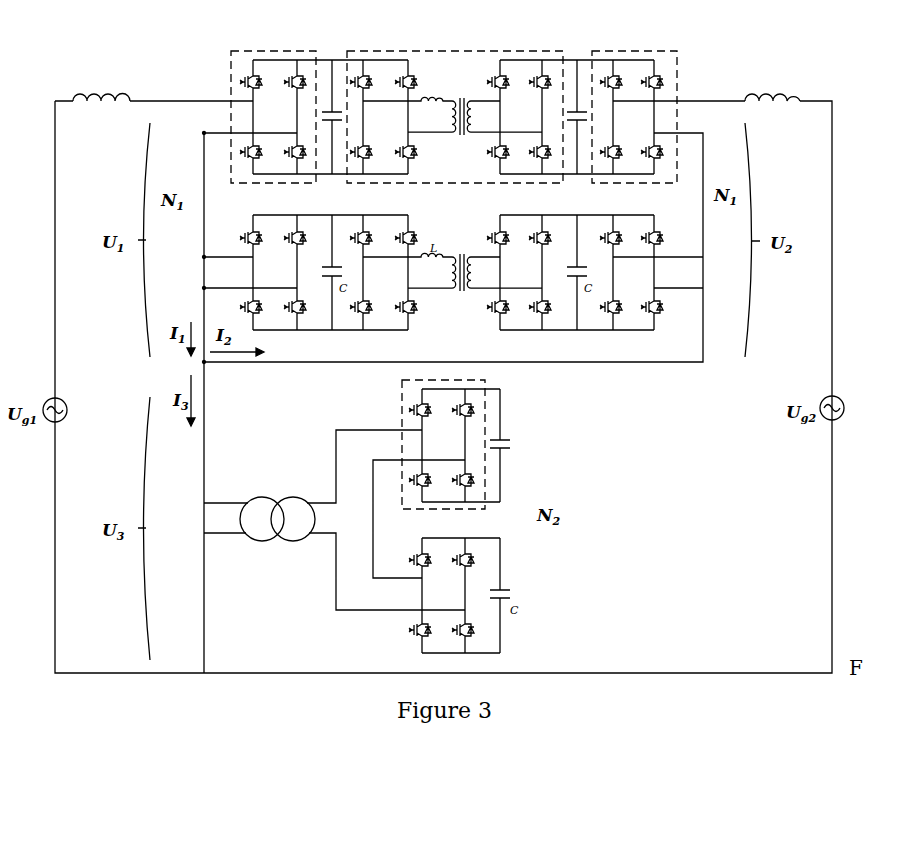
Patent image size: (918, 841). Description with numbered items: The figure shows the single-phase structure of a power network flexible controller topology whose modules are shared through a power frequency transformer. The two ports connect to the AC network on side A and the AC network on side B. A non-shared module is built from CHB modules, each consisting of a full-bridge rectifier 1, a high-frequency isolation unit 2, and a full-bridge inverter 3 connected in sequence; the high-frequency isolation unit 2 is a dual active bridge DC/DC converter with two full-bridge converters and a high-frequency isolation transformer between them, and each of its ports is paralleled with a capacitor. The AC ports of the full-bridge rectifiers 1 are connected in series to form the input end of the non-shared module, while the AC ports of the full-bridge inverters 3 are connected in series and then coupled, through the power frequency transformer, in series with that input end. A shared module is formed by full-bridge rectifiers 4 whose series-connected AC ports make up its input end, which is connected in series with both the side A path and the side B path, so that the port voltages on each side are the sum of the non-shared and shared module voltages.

The full bridge rectifier 1 is at (248, 50).
The high frequency isolation unit 2 is at (412, 50).
The full bridge inverter 3 is at (603, 50).
The full bridge rectifier 4 is at (485, 380).